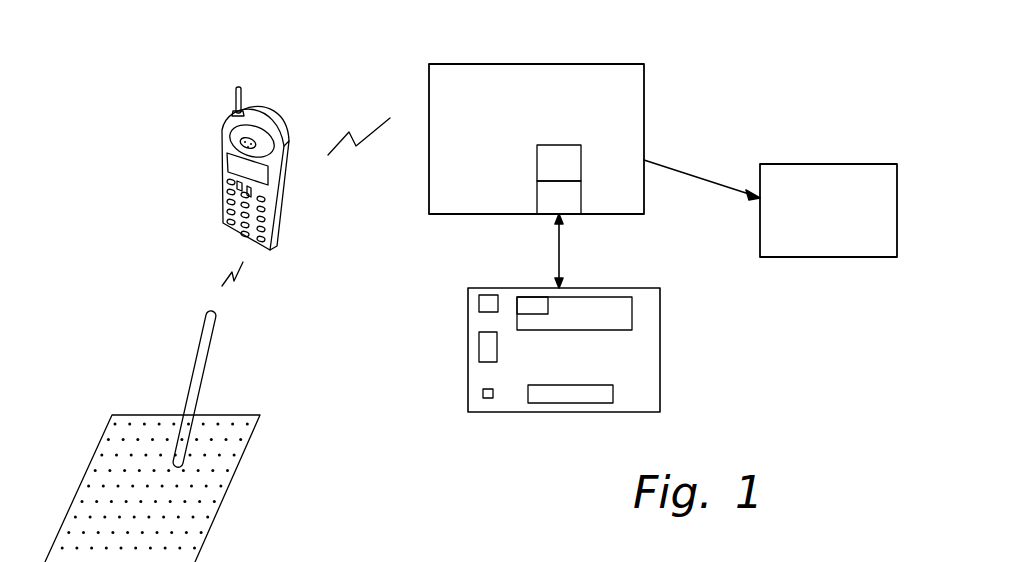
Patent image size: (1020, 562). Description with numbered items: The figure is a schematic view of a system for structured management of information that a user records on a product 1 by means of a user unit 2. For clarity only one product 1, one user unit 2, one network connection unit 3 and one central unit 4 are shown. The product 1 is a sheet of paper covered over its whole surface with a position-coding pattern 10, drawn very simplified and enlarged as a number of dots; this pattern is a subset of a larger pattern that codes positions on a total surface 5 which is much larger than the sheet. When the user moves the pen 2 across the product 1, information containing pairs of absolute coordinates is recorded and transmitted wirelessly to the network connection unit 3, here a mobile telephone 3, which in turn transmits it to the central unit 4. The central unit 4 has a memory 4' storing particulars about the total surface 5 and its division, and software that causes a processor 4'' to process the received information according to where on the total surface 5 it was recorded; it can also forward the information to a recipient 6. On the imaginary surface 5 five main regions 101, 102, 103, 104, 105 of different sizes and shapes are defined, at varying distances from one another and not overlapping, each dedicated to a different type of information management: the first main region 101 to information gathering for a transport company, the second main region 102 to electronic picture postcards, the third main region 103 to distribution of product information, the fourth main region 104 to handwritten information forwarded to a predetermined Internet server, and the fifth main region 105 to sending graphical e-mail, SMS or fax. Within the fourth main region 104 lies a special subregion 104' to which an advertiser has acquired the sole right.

The product 1 is at (238, 467).
The position-coding pattern 10 is at (83, 533).
The user unit 2 is at (208, 353).
The network connection unit 3 is at (283, 200).
The central unit 4 is at (570, 139).
The memory 4' is at (578, 195).
The processor 4'' is at (580, 159).
The total surface 5 is at (660, 338).
The recipient 6 is at (873, 164).
The first main region 101 is at (490, 303).
The second main region 102 is at (479, 345).
The third main region 103 is at (485, 398).
The fourth main region 104 is at (583, 288).
The subregion 104' is at (528, 280).
The fifth main region 105 is at (597, 395).